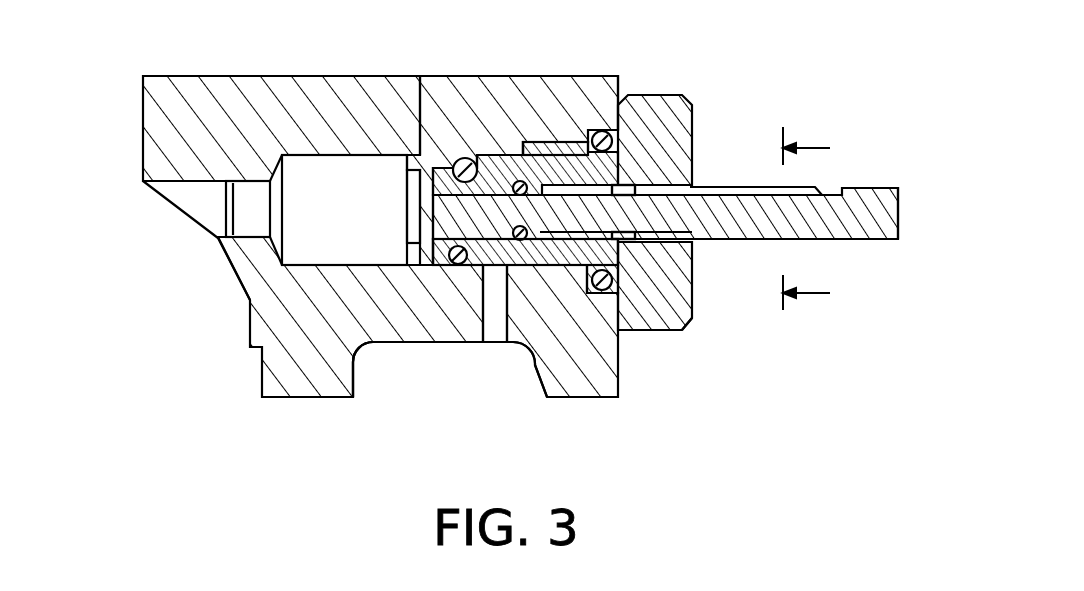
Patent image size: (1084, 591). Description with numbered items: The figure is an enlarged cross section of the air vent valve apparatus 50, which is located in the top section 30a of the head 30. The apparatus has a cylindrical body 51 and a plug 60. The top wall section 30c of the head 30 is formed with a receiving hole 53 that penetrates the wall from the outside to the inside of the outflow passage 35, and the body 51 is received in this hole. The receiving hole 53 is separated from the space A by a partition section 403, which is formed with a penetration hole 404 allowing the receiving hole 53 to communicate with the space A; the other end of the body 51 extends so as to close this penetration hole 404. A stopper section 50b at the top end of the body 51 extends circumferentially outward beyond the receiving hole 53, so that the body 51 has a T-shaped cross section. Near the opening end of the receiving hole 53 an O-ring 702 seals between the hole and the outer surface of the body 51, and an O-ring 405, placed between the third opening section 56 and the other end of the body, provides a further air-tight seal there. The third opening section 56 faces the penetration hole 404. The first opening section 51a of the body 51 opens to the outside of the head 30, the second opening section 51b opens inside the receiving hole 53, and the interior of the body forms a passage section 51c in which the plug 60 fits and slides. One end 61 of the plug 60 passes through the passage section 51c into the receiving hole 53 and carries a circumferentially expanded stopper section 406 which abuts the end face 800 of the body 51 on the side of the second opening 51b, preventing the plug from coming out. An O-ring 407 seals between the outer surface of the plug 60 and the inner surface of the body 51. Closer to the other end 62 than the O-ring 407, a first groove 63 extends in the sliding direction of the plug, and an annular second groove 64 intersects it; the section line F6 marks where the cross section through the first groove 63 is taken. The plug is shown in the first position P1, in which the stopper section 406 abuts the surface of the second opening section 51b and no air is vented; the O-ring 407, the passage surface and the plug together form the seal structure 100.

The head 30 is at (136, 130).
The top section of the head 30a is at (582, 117).
The top wall section of the head 30c is at (350, 120).
The outflow passage 35 is at (150, 241).
The air vent valve apparatus 50 is at (698, 342).
The stopper section 50b is at (660, 93).
The body 51 is at (696, 99).
The first opening section 51a is at (693, 243).
The second opening section 51b is at (432, 165).
The passage section 51c is at (634, 190).
The receiving hole 53 is at (320, 167).
The third opening section 56 is at (518, 262).
The plug 60 is at (893, 253).
The one end of the plug 61 is at (420, 200).
The other end of the plug 62 is at (898, 210).
The first groove 63 is at (818, 187).
The second groove 64 is at (640, 187).
The seal structure 100 is at (505, 140).
The partition section 403 is at (403, 312).
The penetration hole 404 is at (495, 327).
The O-ring 405 is at (455, 268).
The stopper section 406 is at (445, 250).
The O-ring 407 is at (507, 142).
The O-ring 702 is at (605, 132).
The end face of the body 800 is at (445, 257).
The space A is at (507, 373).
The first position P1 is at (893, 187).
The section line F6- F6 is at (810, 221).